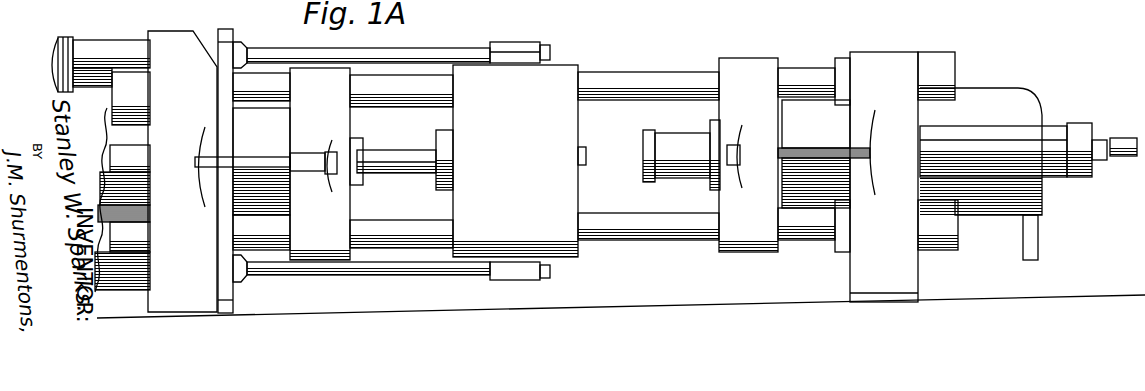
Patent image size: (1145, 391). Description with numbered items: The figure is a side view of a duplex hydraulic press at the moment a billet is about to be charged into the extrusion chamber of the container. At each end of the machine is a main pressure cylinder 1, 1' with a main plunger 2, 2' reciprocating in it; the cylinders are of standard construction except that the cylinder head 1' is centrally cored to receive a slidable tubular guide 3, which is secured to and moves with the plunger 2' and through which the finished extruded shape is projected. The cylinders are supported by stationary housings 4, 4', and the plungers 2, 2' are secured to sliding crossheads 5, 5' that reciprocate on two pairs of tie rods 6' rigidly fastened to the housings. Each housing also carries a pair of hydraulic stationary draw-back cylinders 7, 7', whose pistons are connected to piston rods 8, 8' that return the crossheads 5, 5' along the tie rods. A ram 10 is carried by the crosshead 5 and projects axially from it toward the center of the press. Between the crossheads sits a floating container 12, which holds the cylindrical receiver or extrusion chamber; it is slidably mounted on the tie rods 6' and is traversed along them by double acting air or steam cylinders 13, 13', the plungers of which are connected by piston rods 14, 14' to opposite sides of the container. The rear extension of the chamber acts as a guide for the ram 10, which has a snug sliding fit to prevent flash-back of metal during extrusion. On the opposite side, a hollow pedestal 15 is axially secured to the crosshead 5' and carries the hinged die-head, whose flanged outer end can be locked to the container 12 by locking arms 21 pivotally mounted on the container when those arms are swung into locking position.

The main pressure cylinder 1 is at (114, 192).
The main pressure cylinder 1' is at (980, 156).
The main plunger 2 is at (261, 139).
The main plunger 2' is at (816, 91).
The slidable tubular guide 3 is at (1125, 140).
The stationary housing 4 is at (190, 160).
The stationary housing 4' is at (884, 162).
The sliding crosshead 5 is at (320, 147).
The sliding crosshead 5' is at (748, 143).
The tie rod 6' is at (714, 155).
The draw-back cylinder 7 is at (140, 154).
The draw-back cylinder 7' is at (1013, 140).
The piston rod 8 is at (266, 167).
The piston rod 8' is at (824, 210).
The ram 10 is at (386, 160).
The floating container 12 is at (508, 94).
The double acting cylinder 13 is at (101, 68).
The double acting cylinder 13' is at (122, 298).
The piston rod 14 is at (391, 52).
The piston rod 14' is at (391, 279).
The hollow pedestal 15 is at (681, 147).
The locking arm 21 is at (583, 148).